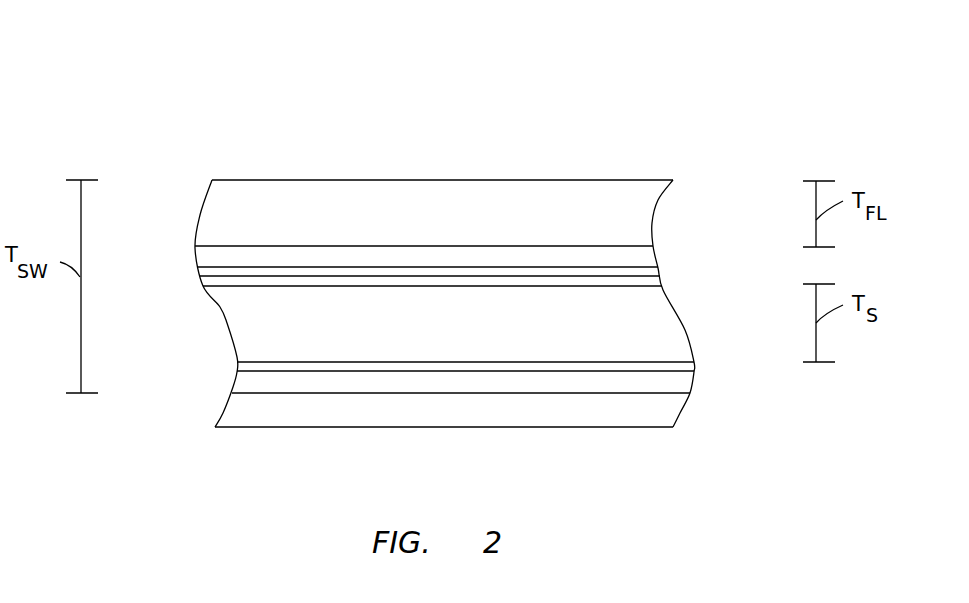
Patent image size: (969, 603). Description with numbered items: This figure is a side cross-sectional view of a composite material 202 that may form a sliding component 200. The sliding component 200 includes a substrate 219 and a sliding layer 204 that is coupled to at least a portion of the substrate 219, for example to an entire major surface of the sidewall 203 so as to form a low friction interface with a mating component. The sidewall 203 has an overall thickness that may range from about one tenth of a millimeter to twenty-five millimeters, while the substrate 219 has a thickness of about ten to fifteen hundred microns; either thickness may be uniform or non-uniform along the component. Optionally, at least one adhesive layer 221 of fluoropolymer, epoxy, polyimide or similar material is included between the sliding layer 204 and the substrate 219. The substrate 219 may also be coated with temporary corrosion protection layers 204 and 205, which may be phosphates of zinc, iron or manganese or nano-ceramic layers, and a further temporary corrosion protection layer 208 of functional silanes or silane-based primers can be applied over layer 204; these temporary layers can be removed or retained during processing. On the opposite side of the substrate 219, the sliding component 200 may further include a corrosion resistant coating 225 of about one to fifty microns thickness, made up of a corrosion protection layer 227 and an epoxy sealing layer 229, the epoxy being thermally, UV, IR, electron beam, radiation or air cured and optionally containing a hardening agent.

The sliding component 200 is at (690, 108).
The composite material 202 is at (690, 45).
The sidewall 203 is at (673, 181).
The sliding layer 204 is at (198, 215).
The temporary corrosion protection layer 205 is at (694, 365).
The temporary corrosion protection layer 208 is at (657, 268).
The substrate 219 is at (222, 312).
The adhesive layer 221 is at (197, 258).
The corrosion resistant coating 225 is at (702, 373).
The corrosion protection layer 227 is at (233, 380).
The epoxy sealing layer 229 is at (221, 415).